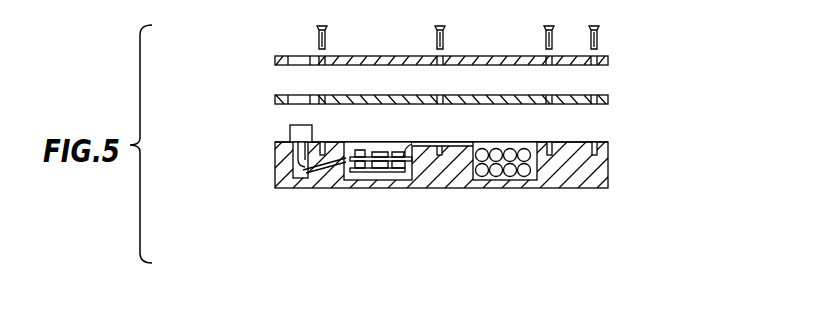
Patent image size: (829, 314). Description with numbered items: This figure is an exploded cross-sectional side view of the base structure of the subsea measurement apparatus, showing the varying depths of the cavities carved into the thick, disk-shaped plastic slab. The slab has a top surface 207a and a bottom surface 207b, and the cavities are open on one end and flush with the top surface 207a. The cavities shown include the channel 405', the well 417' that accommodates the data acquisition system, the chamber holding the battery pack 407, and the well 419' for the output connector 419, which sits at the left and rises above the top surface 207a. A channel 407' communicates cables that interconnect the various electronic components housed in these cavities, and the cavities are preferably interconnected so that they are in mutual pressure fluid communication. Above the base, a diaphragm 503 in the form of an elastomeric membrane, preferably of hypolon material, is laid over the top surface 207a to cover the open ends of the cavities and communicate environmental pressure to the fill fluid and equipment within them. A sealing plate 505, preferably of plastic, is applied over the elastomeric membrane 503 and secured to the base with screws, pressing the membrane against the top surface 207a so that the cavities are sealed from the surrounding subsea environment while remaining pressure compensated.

The sealing plate 505 is at (608, 60).
The diaphragm 503 is at (608, 96).
The channel 407' is at (581, 135).
The top surface 207a is at (603, 142).
The bottom surface 207b is at (597, 190).
The battery pack 407 is at (539, 202).
The well 417' is at (369, 202).
The channel 405' is at (277, 203).
The output connector 419 is at (239, 124).
The well 419' is at (256, 160).